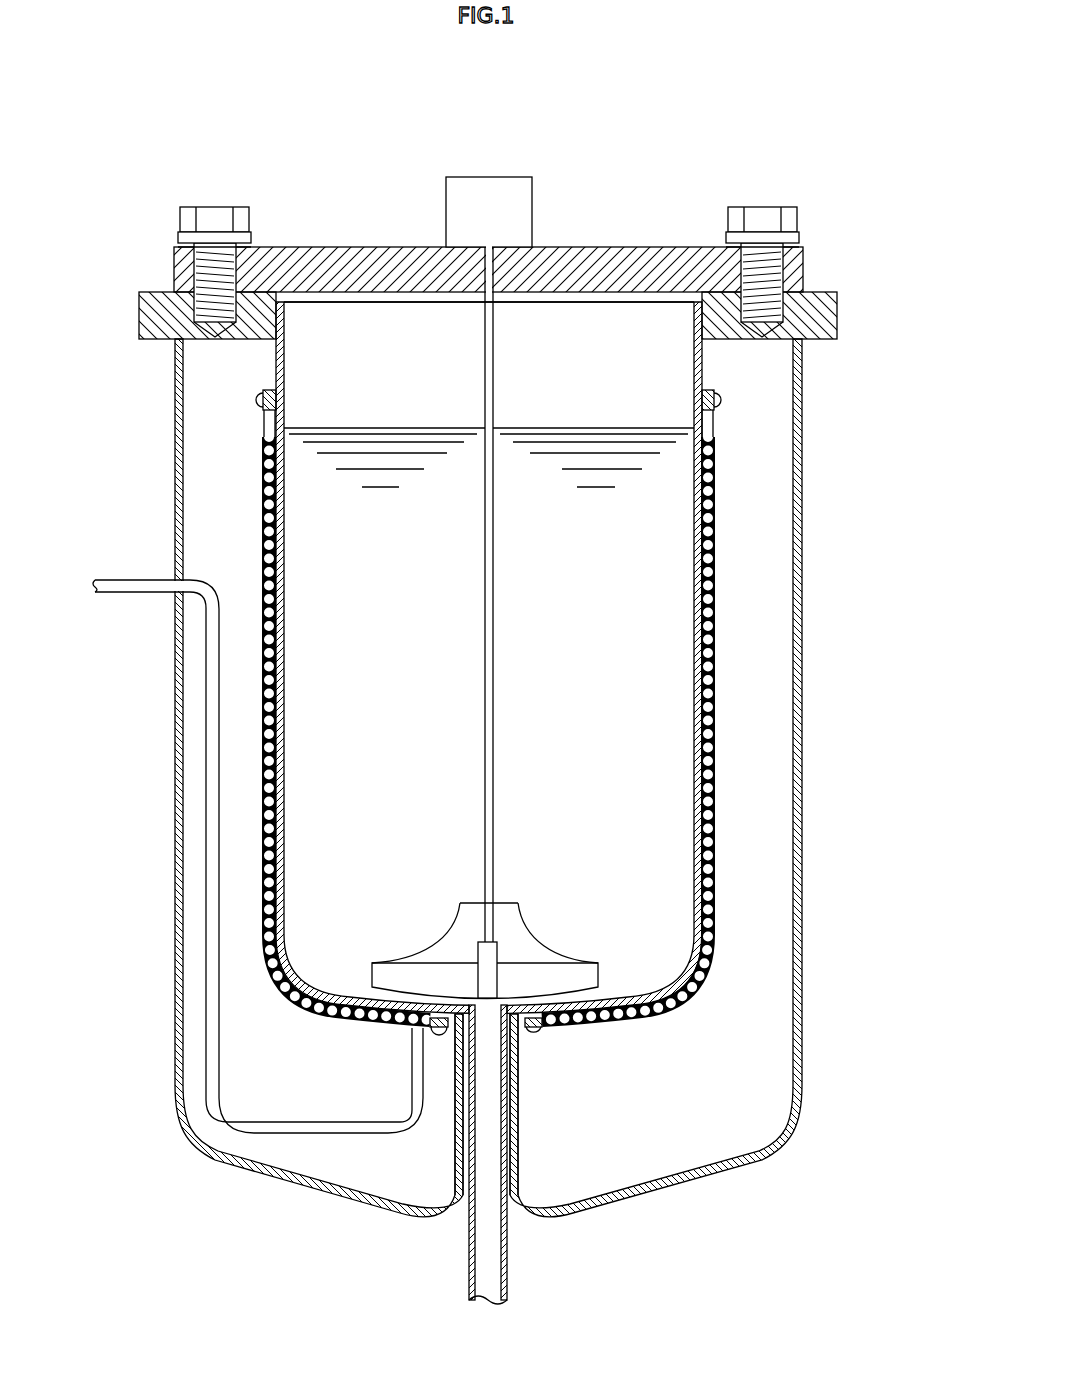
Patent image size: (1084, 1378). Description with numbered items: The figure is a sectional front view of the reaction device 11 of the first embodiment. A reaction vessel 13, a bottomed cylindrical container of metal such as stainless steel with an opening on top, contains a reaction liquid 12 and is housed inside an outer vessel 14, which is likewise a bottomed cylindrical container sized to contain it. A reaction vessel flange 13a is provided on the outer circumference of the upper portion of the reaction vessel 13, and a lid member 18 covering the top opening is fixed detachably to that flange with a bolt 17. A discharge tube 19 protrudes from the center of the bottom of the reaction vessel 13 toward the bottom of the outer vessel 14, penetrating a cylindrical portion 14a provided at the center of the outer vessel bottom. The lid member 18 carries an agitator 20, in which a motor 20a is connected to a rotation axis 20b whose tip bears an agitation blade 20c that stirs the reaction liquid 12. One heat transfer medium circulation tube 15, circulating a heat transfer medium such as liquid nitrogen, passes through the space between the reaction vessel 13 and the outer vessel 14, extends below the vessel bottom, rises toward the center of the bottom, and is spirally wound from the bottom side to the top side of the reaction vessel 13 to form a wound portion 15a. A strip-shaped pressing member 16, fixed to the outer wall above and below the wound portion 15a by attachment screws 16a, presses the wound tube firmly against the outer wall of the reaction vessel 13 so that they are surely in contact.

The reaction device 11 is at (477, 109).
The reaction liquid 12 is at (680, 620).
The reaction vessel 13 is at (698, 352).
The reaction vessel flange 13a is at (824, 320).
The outer vessel 14 is at (178, 436).
The cylindrical portion 14a is at (518, 1134).
The heat transfer medium circulation tube 15 is at (211, 765).
The wound portion 15a is at (710, 530).
The pressing member 16 is at (519, 715).
The attachment screw 16a is at (262, 402).
The bolt 17 is at (212, 214).
The lid member 18 is at (380, 250).
The discharge tube 19 is at (507, 1272).
The agitator 20 is at (490, 556).
The motor 20a is at (524, 208).
The rotation axis 20b is at (485, 620).
The agitation blade 20c is at (560, 963).